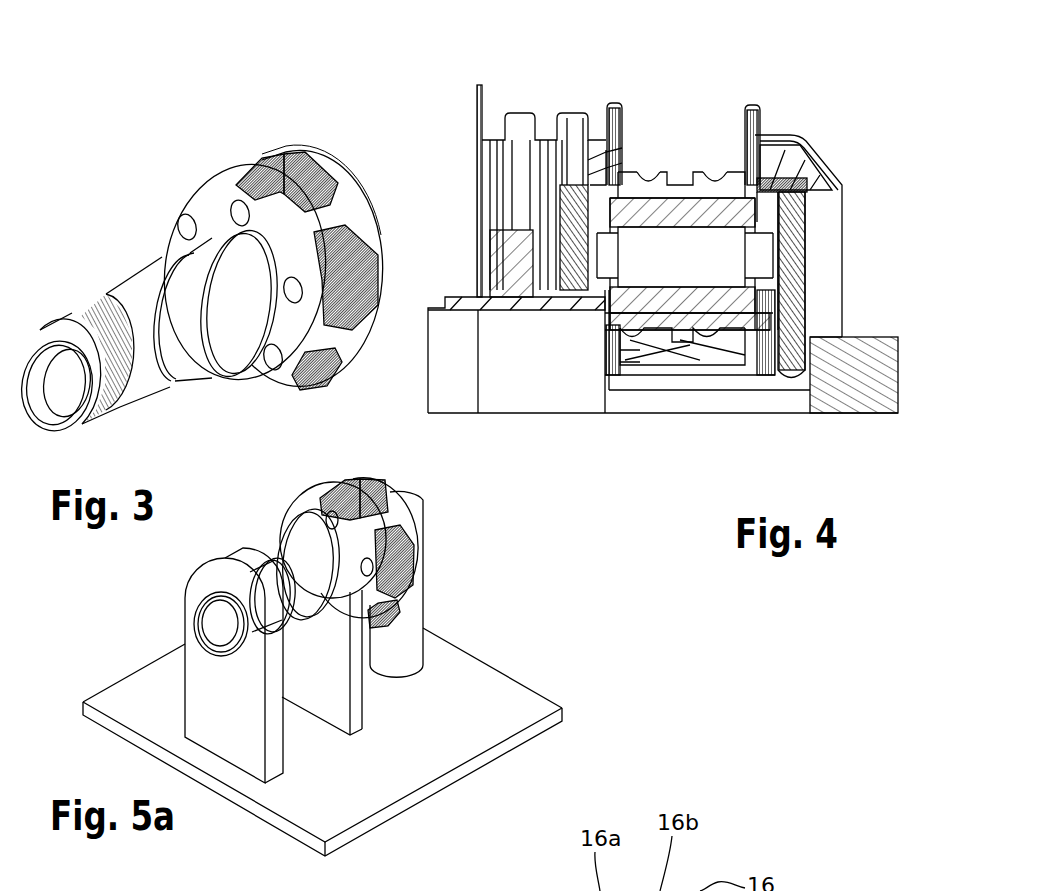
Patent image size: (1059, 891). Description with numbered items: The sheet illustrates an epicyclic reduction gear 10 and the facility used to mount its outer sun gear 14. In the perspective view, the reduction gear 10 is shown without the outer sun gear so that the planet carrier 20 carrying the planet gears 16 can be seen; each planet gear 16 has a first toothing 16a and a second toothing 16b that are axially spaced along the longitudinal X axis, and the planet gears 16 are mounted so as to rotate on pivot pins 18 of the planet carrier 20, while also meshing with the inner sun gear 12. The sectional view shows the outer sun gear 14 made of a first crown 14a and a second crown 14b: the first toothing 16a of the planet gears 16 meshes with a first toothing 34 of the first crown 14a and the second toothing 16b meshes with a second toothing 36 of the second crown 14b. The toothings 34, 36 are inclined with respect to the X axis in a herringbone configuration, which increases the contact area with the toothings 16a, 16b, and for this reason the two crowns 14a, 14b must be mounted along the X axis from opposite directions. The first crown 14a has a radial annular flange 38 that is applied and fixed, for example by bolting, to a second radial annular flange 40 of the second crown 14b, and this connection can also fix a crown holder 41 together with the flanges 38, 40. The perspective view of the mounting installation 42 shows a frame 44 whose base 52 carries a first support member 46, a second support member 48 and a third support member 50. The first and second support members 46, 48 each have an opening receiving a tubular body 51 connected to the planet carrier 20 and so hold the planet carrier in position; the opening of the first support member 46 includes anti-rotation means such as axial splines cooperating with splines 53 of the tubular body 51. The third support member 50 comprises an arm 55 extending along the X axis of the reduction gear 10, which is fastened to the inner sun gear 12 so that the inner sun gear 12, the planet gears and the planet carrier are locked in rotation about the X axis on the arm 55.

In FIG. 3, the reduction gear 10 is at (148, 205).
In FIG. 4, the inner sun gear 12 is at (720, 345).
In FIG. 4, the outer sun gear 14 is at (606, 98).
In FIG. 4, the first crown 14a is at (628, 147).
In FIG. 4, the second crown 14b is at (818, 150).
In FIG. 3, the planet gears 16 is at (325, 158).
In FIG. 4, the planet gears 16 is at (800, 211).
In FIG. 5a, the planet gears 16 is at (367, 526).
In FIG. 3, the first toothing 16a is at (256, 160).
In FIG. 4, the first toothing 16a is at (660, 172).
In FIG. 5a, the first toothing 16a is at (342, 480).
In FIG. 3, the second toothing 16b is at (284, 152).
In FIG. 4, the second toothing 16b is at (706, 172).
In FIG. 5a, the second toothing 16b is at (372, 480).
In FIG. 4, the pivot pins 18 is at (650, 215).
In FIG. 3, the planet carrier 20 is at (322, 212).
In FIG. 4, the planet carrier 20 is at (452, 296).
In FIG. 5a, the planet carrier 20 is at (285, 570).
In FIG. 4, the first toothing of the first crown 34 is at (577, 172).
In FIG. 4, the second toothing of the second crown 36 is at (796, 186).
In FIG. 4, the radial annular flange 38 is at (612, 140).
In FIG. 4, the second radial annular flange 40 is at (746, 130).
In FIG. 4, the crown holder 41 is at (521, 104).
In FIG. 5a, the installation 42 is at (452, 556).
In FIG. 5a, the frame 44 is at (512, 658).
In FIG. 5a, the first support member 46 is at (250, 745).
In FIG. 5a, the second support member 48 is at (336, 708).
In FIG. 5a, the third support member 50 is at (415, 658).
In FIG. 3, the tubular body 51 is at (126, 276).
In FIG. 5a, the base 52 is at (506, 712).
In FIG. 3, the splines 53 is at (97, 318).
In FIG. 4, the arm 55 is at (650, 372).